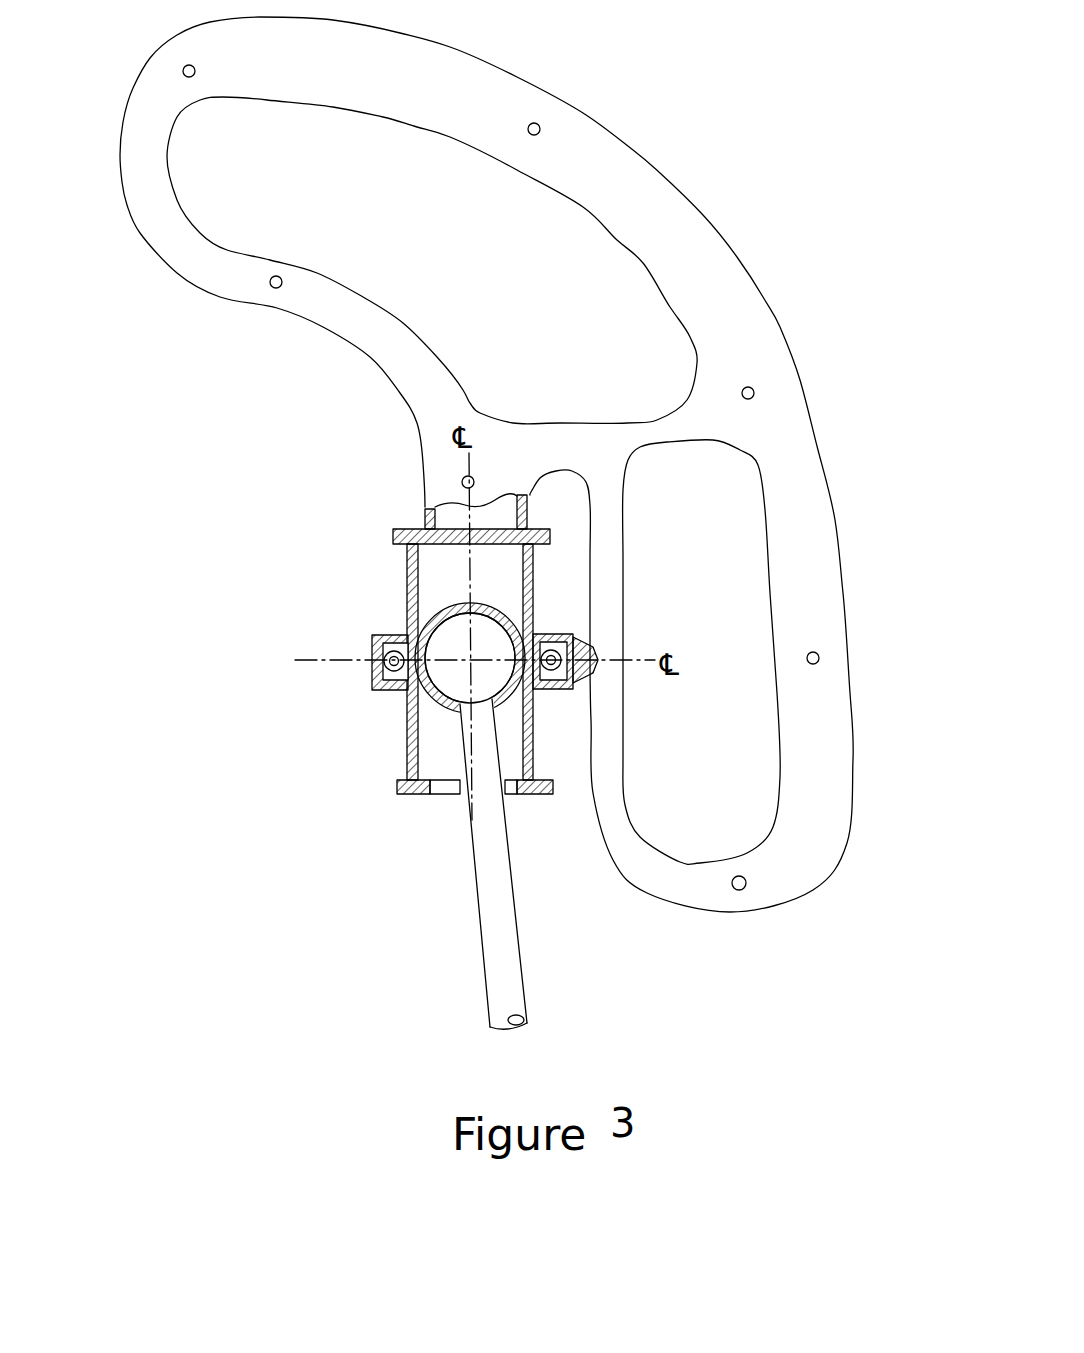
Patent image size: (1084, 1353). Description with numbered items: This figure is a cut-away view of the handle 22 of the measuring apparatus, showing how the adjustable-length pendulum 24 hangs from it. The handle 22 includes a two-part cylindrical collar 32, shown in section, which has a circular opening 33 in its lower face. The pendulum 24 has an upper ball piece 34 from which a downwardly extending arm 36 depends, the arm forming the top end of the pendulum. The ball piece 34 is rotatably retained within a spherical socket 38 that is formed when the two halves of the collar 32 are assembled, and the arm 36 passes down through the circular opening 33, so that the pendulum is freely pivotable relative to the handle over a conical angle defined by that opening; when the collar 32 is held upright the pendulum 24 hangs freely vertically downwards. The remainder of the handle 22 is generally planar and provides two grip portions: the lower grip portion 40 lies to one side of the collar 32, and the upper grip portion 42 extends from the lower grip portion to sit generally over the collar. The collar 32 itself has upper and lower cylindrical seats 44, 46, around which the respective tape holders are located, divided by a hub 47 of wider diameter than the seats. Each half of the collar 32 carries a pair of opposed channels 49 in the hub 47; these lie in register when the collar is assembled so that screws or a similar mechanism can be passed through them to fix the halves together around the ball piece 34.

The handle 22 is at (767, 196).
The pendulum 24 is at (463, 1014).
The cylindrical collar 32 is at (391, 585).
The circular opening 33 is at (450, 795).
The ball piece 34 is at (443, 667).
The arm 36 is at (505, 935).
The spherical socket 38 is at (424, 612).
The lower grip portion 40 is at (823, 593).
The upper grip portion 42 is at (483, 83).
The upper cylindrical seat 44 is at (407, 560).
The lower cylindrical seat 46 is at (410, 728).
The hub 47 is at (375, 637).
The channels 49 is at (384, 663).